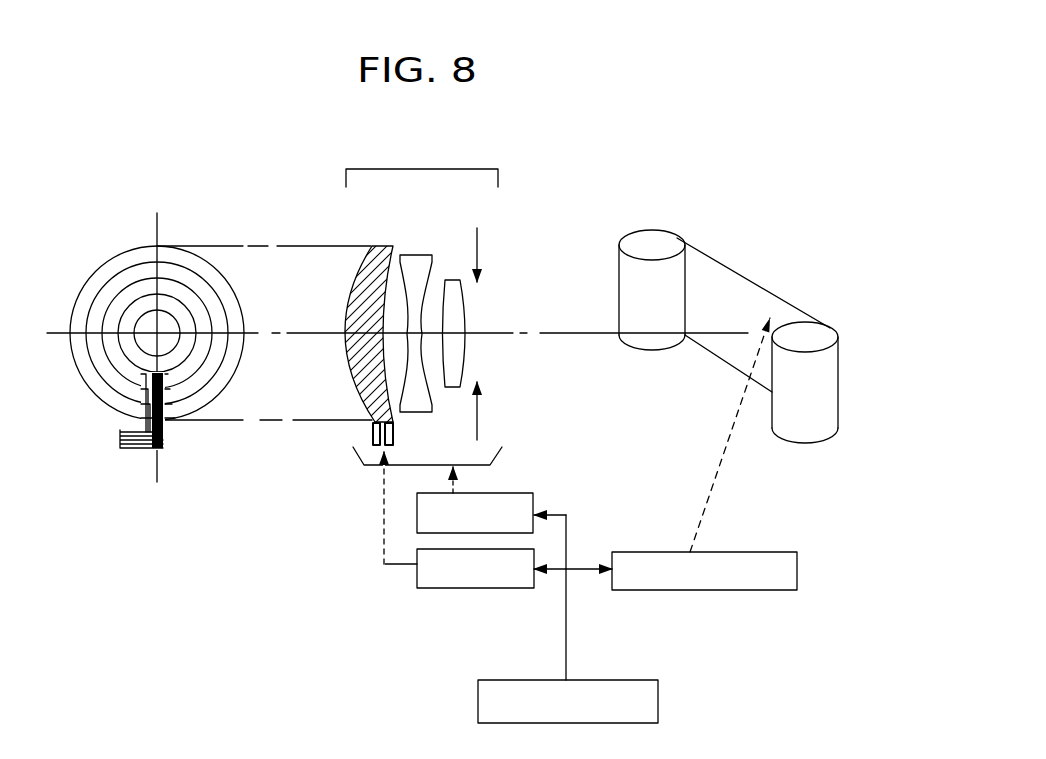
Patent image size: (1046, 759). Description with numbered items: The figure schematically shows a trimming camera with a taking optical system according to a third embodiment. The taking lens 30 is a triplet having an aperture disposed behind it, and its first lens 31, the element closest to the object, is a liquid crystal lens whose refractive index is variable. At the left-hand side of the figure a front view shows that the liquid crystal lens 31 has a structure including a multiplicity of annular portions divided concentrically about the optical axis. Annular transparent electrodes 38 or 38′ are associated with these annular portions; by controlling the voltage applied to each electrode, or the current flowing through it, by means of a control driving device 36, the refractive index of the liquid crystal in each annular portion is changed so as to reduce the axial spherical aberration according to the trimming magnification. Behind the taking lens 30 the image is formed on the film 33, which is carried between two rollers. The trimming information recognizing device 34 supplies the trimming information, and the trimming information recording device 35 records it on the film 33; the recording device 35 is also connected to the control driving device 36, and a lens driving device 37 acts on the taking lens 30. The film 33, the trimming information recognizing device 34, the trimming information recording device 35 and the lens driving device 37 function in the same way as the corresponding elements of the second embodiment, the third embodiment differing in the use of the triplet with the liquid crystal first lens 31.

The taking lens 30 is at (413, 168).
The first lens 31 is at (377, 247).
The film 33 is at (655, 238).
The trimming information recognizing device 34 is at (659, 710).
The trimming information recording device 35 is at (797, 590).
The control driving device 36 is at (430, 588).
The lens driving device 37 is at (515, 493).
The annular transparent electrode 38 is at (122, 448).
The annular transparent electrode 38′ is at (385, 443).